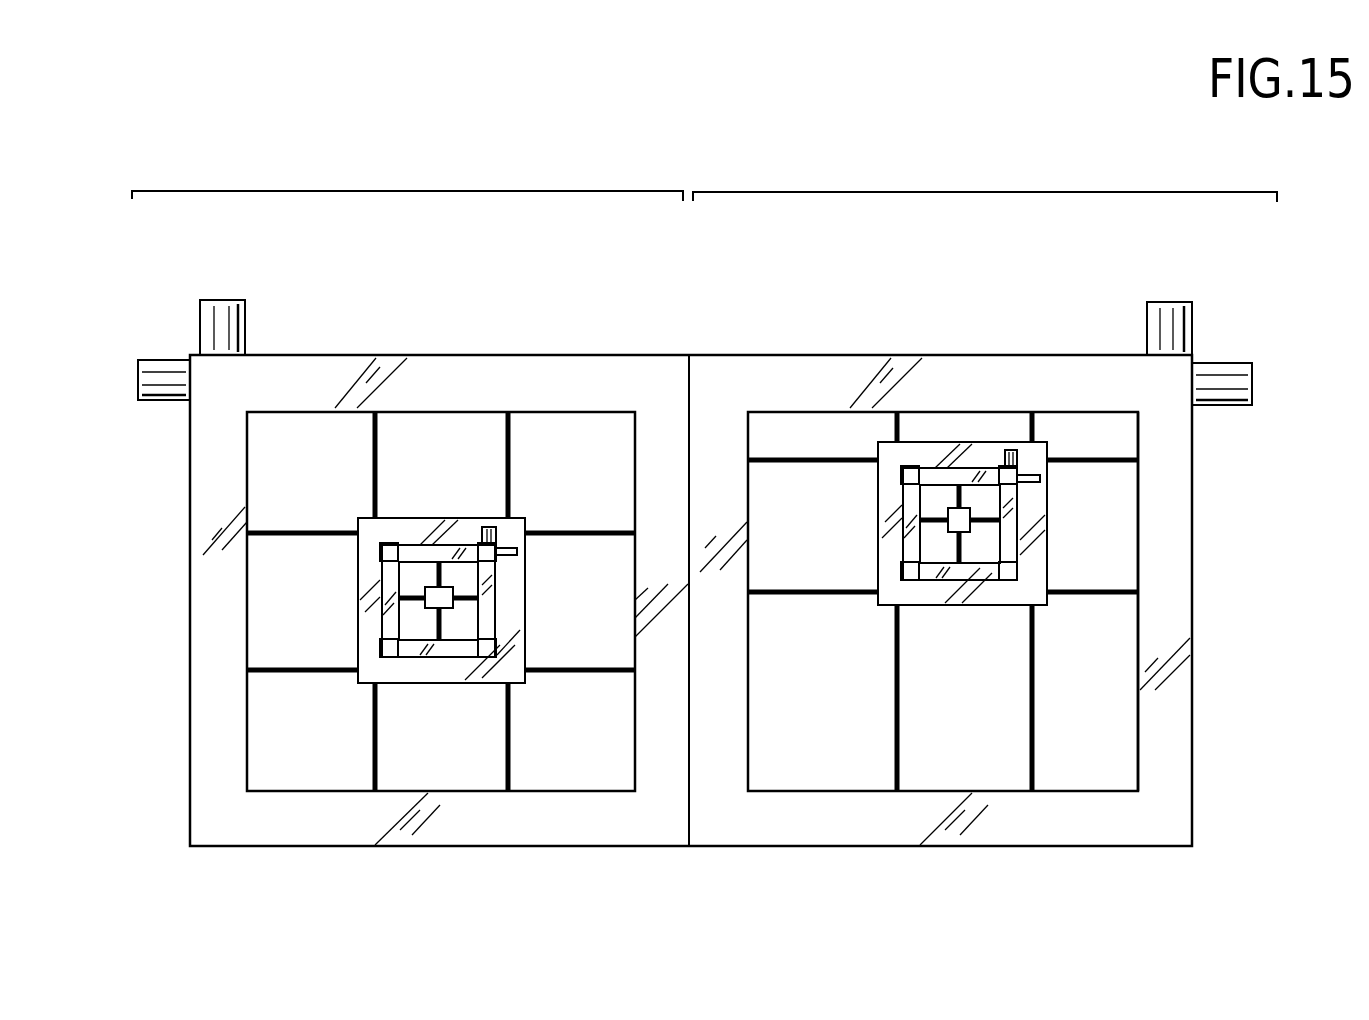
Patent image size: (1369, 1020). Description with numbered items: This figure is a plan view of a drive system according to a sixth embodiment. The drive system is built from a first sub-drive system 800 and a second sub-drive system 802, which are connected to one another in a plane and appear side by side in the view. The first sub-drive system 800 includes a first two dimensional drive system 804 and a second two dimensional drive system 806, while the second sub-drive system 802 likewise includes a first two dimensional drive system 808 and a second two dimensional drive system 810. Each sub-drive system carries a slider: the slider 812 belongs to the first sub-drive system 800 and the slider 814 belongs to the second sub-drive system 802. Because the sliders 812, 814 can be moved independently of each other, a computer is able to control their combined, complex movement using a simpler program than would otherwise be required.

The first sub-drive system 800 is at (951, 189).
The second sub-drive system 802 is at (420, 188).
The first two dimensional drive system 804 is at (934, 580).
The second two dimensional drive system 806 is at (1172, 527).
The first two dimensional drive system 808 is at (376, 609).
The second two dimensional drive system 810 is at (188, 816).
The slider 812 is at (949, 516).
The slider 814 is at (434, 592).